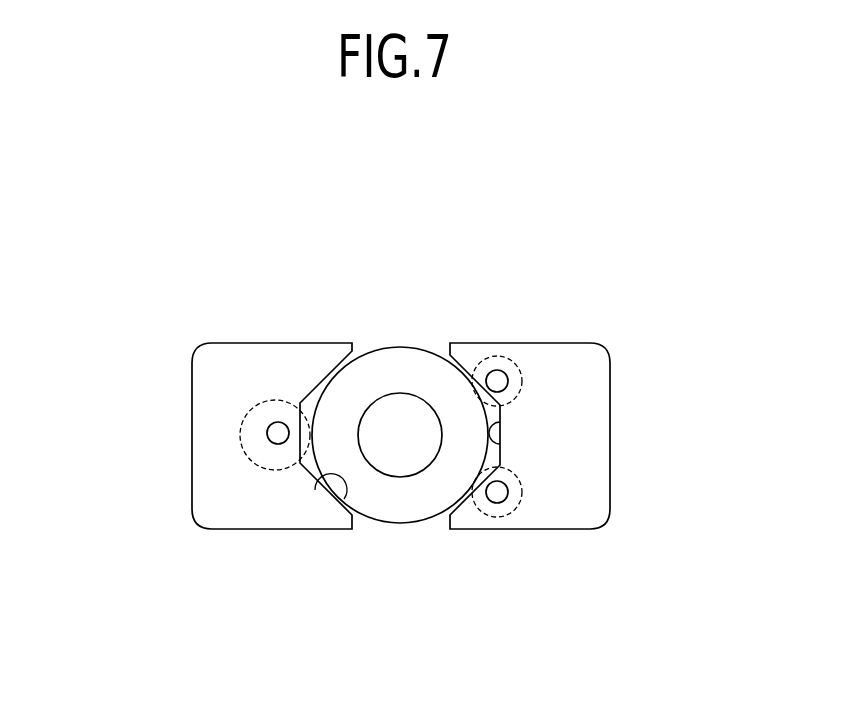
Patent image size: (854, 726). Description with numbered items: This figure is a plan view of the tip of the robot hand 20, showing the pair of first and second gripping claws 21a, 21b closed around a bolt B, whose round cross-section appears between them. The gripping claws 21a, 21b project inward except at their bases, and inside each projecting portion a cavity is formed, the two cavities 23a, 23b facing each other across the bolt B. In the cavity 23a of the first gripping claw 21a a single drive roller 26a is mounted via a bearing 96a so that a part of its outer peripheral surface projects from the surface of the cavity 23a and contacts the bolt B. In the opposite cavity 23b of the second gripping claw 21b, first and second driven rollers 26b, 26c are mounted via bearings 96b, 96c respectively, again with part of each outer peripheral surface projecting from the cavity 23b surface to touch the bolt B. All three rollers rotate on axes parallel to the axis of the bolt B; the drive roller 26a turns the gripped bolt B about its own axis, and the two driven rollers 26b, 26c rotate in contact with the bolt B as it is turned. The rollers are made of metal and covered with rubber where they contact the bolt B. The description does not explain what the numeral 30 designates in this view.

The hand 20 is at (245, 243).
The first gripping claw 21a is at (218, 392).
The second gripping claw 21b is at (598, 417).
The cavity 23a is at (345, 497).
The cavity 23b is at (500, 447).
The drive roller 26a is at (262, 405).
The first driven roller 26b is at (517, 503).
The second driven roller 26c is at (520, 373).
The bearing 96a is at (267, 431).
The bearing 96b is at (494, 503).
The bearing 96c is at (490, 373).
The bearing 30 is at (278, 580).
The bolt B is at (383, 510).